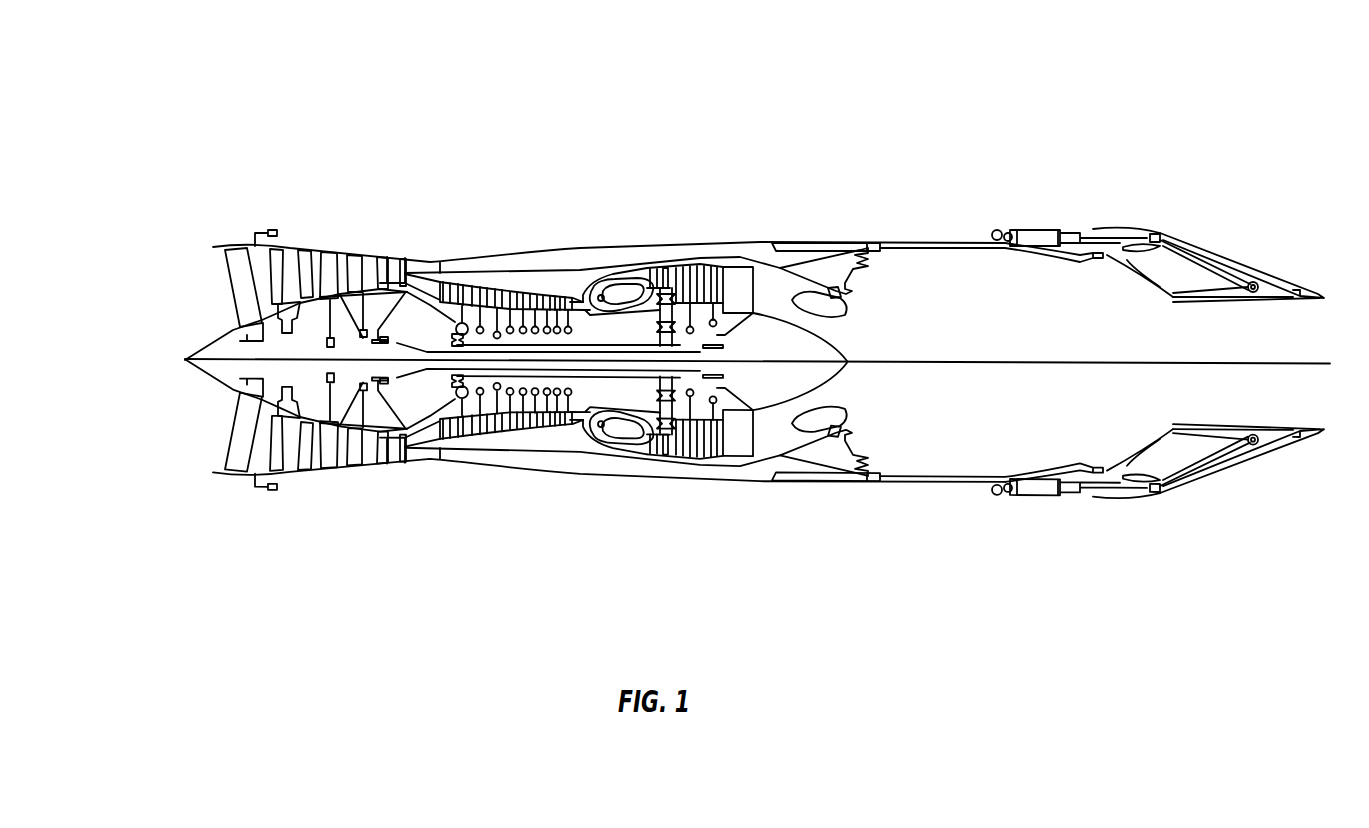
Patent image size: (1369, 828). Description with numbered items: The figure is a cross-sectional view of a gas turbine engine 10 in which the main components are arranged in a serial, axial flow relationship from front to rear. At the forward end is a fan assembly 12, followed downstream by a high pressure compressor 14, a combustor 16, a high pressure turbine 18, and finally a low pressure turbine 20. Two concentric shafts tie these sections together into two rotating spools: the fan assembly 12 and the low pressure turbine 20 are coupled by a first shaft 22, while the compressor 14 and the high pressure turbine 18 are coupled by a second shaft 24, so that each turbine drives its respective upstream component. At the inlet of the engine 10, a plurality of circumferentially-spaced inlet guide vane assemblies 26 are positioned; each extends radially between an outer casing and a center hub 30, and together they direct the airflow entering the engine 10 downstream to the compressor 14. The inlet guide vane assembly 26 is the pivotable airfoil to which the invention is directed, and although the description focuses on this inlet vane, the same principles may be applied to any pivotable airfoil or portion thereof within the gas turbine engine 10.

The gas turbine engine 10 is at (389, 110).
The fan assembly 12 is at (343, 244).
The high pressure compressor 14 is at (528, 430).
The combustor 16 is at (633, 275).
The high pressure turbine 18 is at (670, 275).
The low pressure turbine 20 is at (703, 273).
The first shaft 22 is at (600, 352).
The second shaft 24 is at (598, 368).
The inlet guide vane assembly 26 is at (216, 284).
The center hub 30 is at (204, 352).